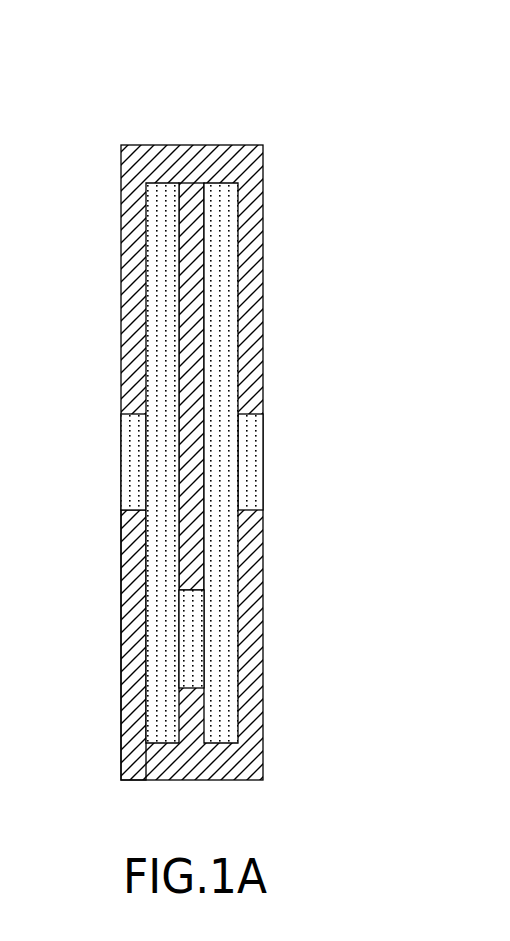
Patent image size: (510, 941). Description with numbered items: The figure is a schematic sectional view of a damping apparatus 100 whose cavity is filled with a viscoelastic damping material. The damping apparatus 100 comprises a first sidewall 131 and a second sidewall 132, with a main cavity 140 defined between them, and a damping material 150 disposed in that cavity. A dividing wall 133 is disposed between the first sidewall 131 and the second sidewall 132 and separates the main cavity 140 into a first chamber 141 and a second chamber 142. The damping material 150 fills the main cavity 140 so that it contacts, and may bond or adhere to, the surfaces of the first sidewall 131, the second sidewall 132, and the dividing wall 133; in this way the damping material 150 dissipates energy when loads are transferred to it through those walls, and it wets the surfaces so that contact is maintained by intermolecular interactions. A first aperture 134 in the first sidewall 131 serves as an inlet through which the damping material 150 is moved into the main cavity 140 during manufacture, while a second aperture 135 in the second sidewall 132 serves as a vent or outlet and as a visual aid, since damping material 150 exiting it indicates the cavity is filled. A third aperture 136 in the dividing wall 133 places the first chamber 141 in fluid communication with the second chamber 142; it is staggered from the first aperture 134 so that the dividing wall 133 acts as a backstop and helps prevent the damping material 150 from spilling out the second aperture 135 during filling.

The damping apparatus 100 is at (205, 422).
The first sidewall 131 is at (263, 600).
The second sidewall 132 is at (120, 570).
The dividing wall 133 is at (204, 537).
The first aperture 134 is at (263, 455).
The second aperture 135 is at (120, 484).
The third aperture 136 is at (191, 690).
The main cavity 140 is at (222, 647).
The first chamber 141 is at (222, 708).
The second chamber 142 is at (155, 700).
The damping material 150 is at (165, 630).